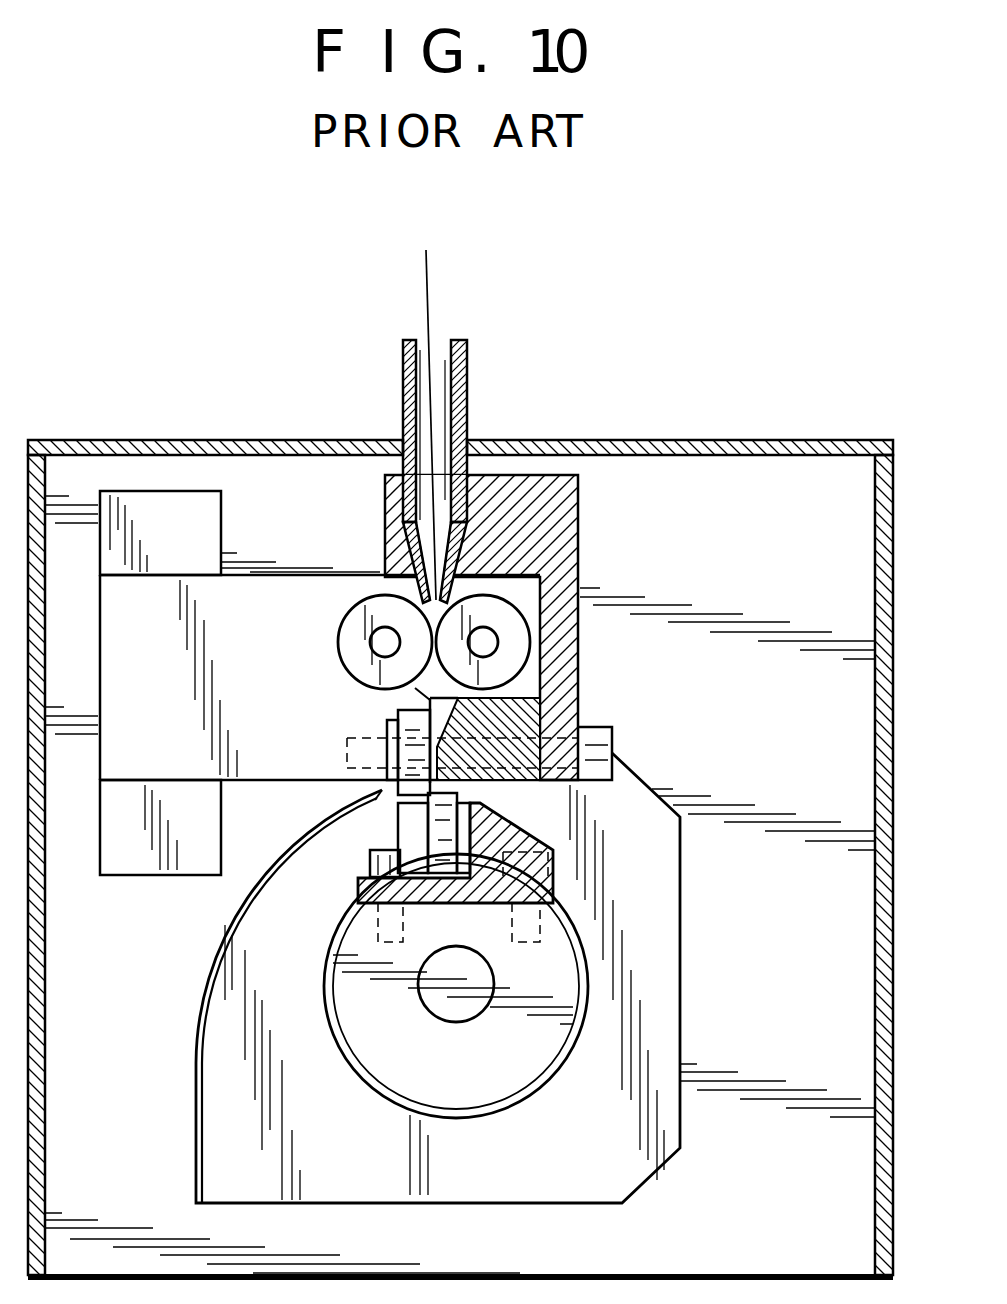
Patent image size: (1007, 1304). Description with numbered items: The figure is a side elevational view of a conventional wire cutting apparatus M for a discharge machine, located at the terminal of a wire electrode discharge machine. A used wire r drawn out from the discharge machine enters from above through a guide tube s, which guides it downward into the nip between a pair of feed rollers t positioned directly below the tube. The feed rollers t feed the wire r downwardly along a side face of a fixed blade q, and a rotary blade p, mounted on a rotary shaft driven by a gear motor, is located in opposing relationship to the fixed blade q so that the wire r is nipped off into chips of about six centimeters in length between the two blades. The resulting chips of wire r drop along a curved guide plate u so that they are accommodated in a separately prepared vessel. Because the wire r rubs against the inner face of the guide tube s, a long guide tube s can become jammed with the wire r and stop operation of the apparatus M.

The wire cutting apparatus M is at (722, 416).
The wire r is at (427, 300).
The guide tube s is at (467, 405).
The feed rollers t is at (518, 633).
The fixed blade q is at (387, 736).
The rotary blade p is at (428, 832).
The guide plate u is at (192, 998).